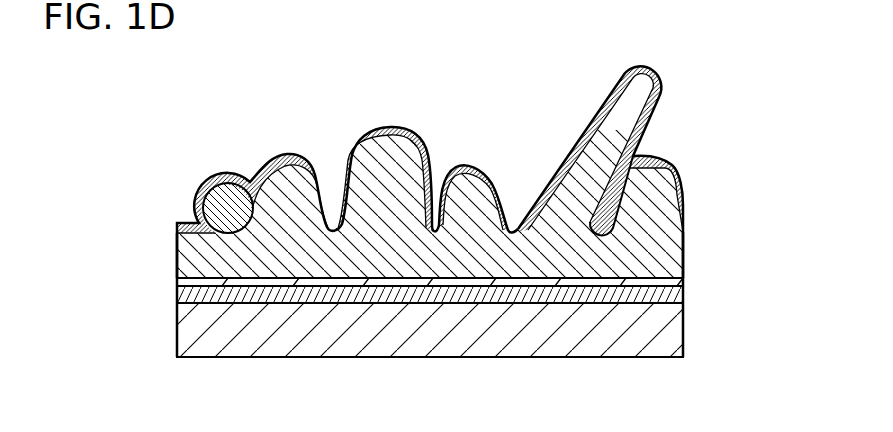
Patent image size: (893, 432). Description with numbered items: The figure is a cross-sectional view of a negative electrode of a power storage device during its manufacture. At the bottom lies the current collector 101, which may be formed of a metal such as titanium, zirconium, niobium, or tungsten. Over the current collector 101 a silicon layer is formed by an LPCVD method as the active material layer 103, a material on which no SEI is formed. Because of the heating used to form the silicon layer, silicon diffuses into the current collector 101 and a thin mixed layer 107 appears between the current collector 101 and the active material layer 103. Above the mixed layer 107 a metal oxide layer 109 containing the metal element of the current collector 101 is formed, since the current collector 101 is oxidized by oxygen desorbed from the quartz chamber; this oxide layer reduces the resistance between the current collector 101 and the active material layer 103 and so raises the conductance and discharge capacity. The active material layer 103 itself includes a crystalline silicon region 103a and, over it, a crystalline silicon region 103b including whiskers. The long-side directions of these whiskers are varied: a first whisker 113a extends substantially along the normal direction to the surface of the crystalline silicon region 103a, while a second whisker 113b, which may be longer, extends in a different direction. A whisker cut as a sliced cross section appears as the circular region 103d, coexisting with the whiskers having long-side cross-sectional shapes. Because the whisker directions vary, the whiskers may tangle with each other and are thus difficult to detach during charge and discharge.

The current collector 101 is at (430, 333).
The mixed layer 107 is at (498, 296).
The metal oxide layer 109 is at (575, 283).
The active material layer 103 is at (163, 67).
The crystalline silicon region 103a is at (699, 236).
The crystalline silicon region including whiskers 103b is at (699, 75).
The region 103d is at (232, 205).
The first whisker 113a is at (373, 176).
The second whisker 113b is at (586, 126).